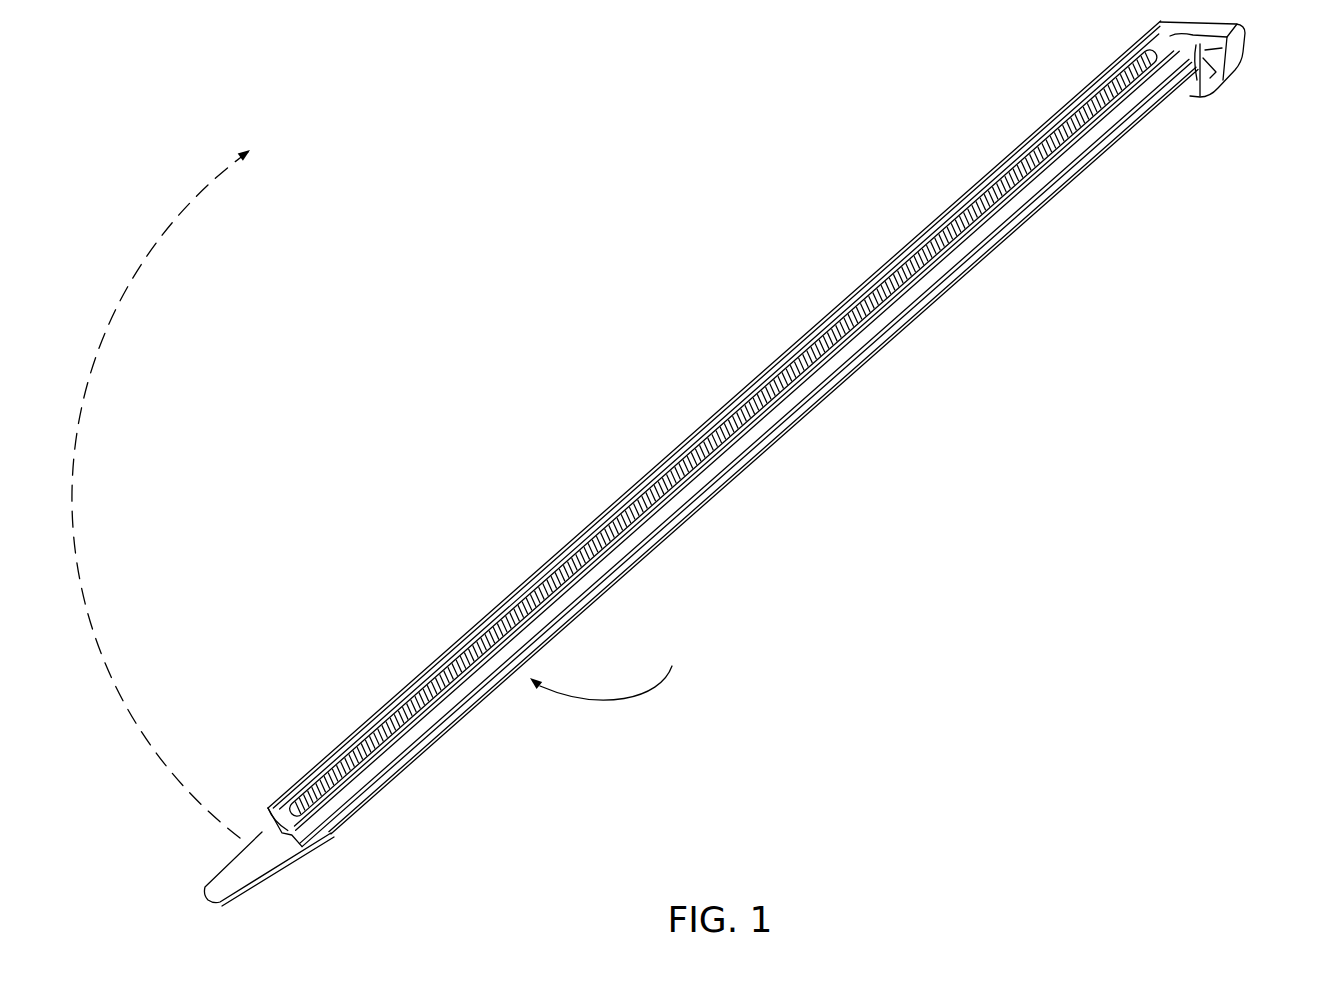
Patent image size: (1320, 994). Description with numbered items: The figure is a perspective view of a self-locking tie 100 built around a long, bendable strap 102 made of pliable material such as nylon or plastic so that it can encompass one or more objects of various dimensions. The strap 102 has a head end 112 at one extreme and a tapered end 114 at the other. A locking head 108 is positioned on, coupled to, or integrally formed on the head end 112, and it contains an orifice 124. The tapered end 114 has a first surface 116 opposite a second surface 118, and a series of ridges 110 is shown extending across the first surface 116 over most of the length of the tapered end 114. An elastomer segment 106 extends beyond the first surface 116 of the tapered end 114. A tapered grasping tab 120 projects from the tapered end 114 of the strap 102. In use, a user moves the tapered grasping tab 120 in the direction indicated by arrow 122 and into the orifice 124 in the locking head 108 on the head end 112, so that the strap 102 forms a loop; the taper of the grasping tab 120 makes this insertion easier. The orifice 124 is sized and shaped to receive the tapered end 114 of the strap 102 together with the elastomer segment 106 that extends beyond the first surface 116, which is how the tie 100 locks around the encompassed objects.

The self-locking tie 100 is at (410, 183).
The strap 102 is at (755, 392).
The elastomer segment 106 is at (428, 682).
The locking head 108 is at (1244, 68).
The series of ridges 110 is at (603, 535).
The head end 112 is at (1203, 98).
The tapered end 114 is at (258, 855).
The first surface 116 is at (232, 870).
The second surface 118 is at (610, 668).
The tapered grasping tab 120 is at (318, 846).
The arrow 122 is at (78, 503).
The orifice 124 is at (1197, 82).